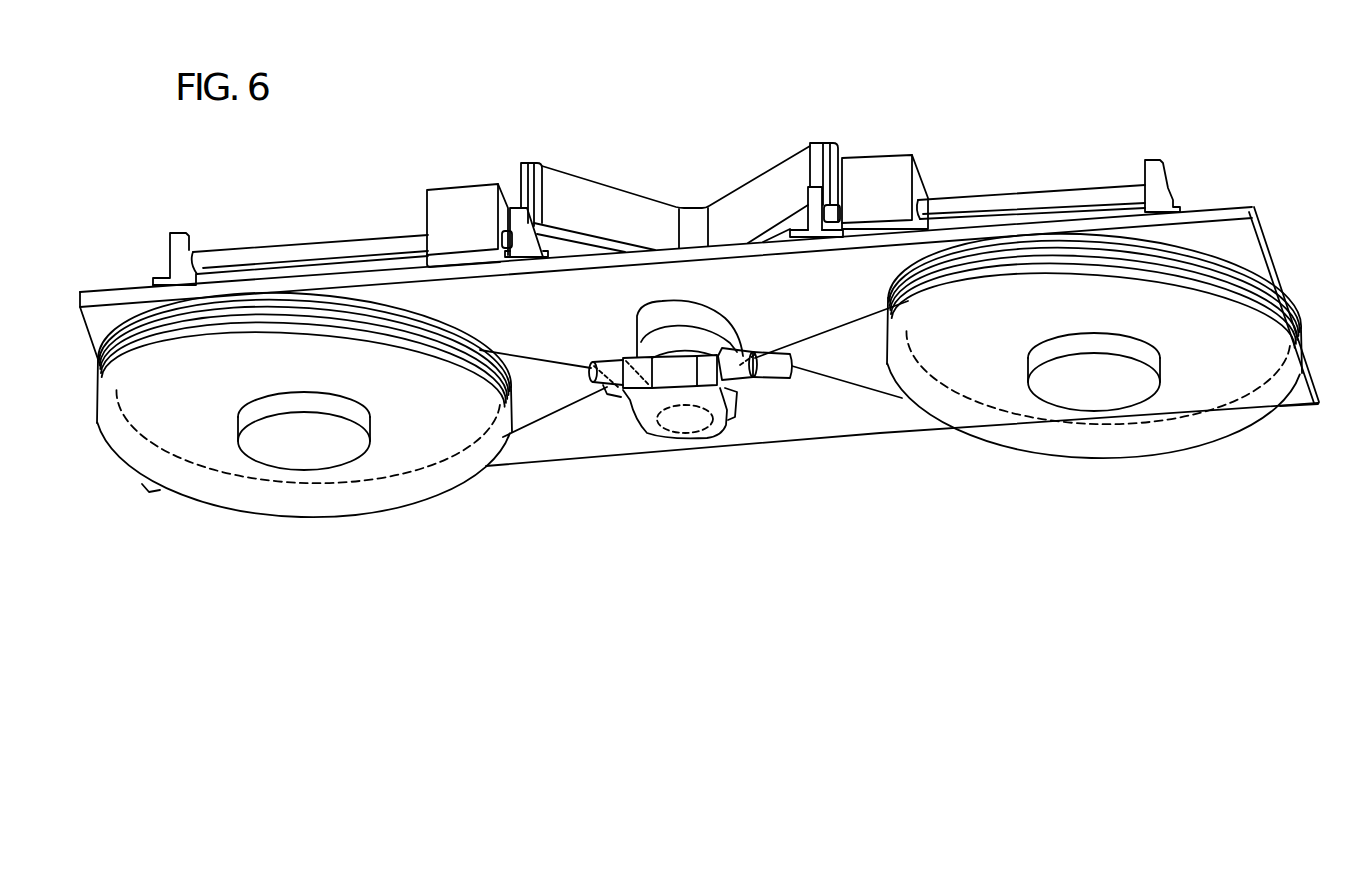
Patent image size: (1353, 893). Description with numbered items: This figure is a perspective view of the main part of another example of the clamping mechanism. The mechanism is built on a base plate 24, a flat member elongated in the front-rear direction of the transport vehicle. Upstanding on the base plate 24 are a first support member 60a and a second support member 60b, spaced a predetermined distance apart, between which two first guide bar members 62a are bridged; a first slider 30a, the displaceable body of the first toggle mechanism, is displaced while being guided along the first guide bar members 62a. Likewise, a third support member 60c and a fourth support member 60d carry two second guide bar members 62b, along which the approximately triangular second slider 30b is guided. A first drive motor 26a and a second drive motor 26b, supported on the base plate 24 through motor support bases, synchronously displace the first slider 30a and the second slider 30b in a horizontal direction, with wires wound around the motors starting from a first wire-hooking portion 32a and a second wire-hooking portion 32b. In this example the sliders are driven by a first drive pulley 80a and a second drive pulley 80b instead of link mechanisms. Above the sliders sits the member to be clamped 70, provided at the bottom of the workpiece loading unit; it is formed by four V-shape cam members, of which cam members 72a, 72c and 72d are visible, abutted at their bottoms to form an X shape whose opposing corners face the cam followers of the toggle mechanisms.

The base plate 24 is at (610, 452).
The first drive motor 26a is at (723, 428).
The second drive motor 26b is at (710, 320).
The first slider 30a is at (453, 200).
The second slider 30b is at (883, 170).
The first wire-hooking portion 32a is at (572, 360).
The second wire-hooking portion 32b is at (828, 384).
The first support member 60a is at (177, 236).
The second support member 60b is at (517, 252).
The third support member 60c is at (1167, 184).
The fourth support member 60d is at (815, 225).
The first guide bar members 62a is at (338, 247).
The second guide bar members 62b is at (1098, 196).
The member to be clamped 70 is at (645, 216).
The V-shape cam member 72a is at (562, 247).
The V-shape cam member 72c is at (838, 157).
The V-shape cam member 72d is at (776, 178).
The first drive pulley 80a is at (430, 481).
The second drive pulley 80b is at (1068, 448).